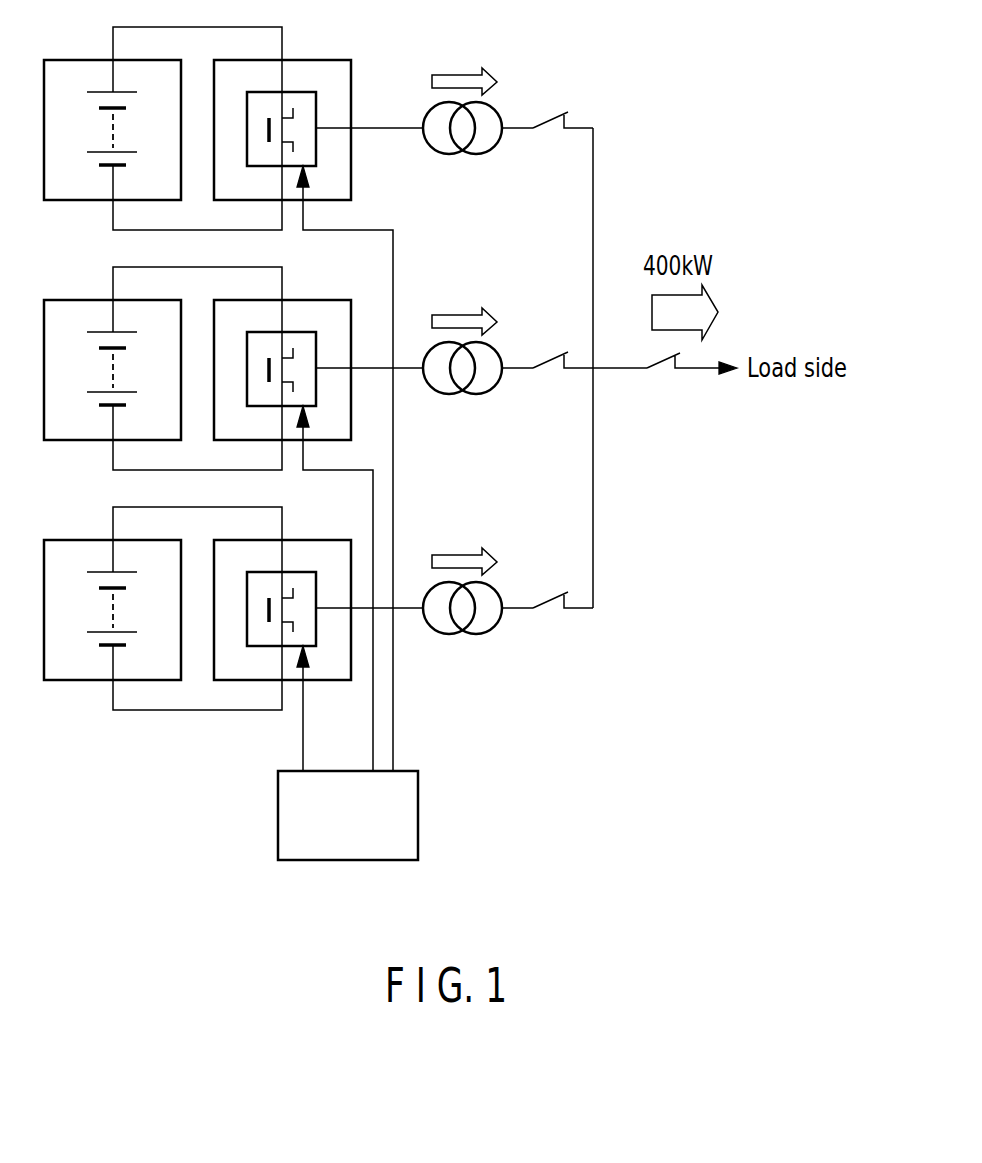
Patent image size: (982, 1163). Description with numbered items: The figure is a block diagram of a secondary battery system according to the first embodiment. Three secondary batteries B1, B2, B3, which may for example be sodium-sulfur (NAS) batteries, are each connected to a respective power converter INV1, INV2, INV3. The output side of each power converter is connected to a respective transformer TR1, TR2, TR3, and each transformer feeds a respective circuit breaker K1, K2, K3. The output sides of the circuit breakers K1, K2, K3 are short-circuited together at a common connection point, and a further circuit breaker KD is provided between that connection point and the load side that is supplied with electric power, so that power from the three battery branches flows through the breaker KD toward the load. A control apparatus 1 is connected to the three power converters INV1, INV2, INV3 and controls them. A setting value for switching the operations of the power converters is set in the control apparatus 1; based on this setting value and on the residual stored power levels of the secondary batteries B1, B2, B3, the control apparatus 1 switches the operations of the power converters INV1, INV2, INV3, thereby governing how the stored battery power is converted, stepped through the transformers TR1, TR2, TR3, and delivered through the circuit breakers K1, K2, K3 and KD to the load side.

The secondary battery B1 is at (60, 58).
The secondary battery B2 is at (60, 298).
The secondary battery B3 is at (60, 538).
The power converter INV1 is at (318, 58).
The power converter INV2 is at (318, 298).
The power converter INV3 is at (318, 538).
The transformer TR1 is at (495, 110).
The transformer TR2 is at (495, 350).
The transformer TR3 is at (495, 590).
The circuit breaker K1 is at (548, 130).
The circuit breaker K2 is at (548, 370).
The circuit breaker K3 is at (548, 610).
The circuit breaker KD is at (662, 370).
The control apparatus 1 is at (418, 812).